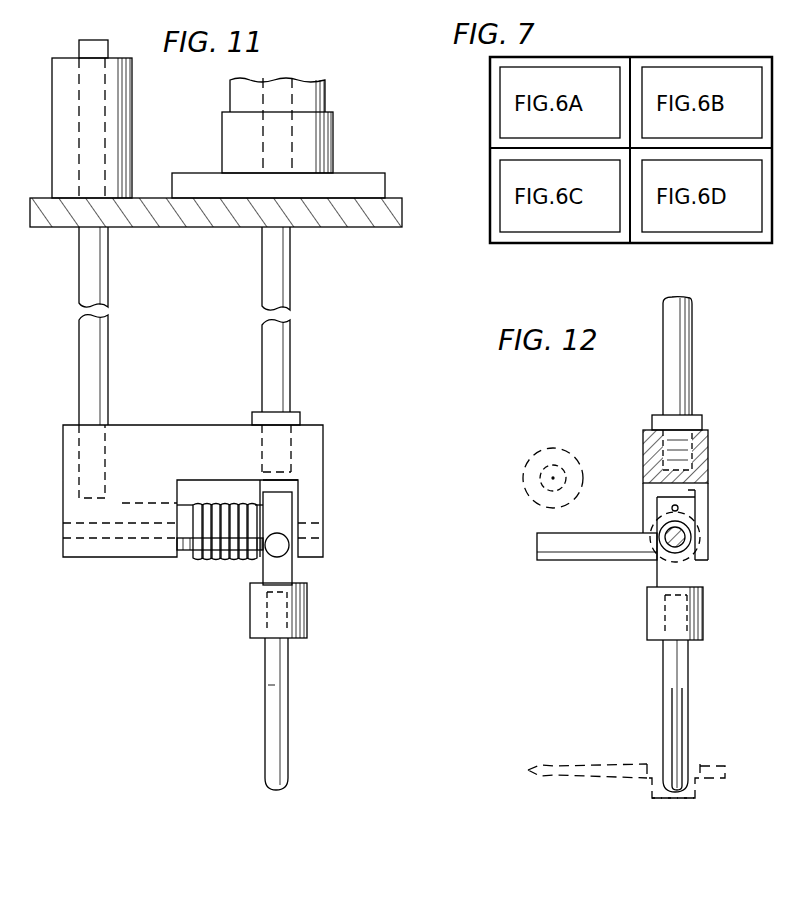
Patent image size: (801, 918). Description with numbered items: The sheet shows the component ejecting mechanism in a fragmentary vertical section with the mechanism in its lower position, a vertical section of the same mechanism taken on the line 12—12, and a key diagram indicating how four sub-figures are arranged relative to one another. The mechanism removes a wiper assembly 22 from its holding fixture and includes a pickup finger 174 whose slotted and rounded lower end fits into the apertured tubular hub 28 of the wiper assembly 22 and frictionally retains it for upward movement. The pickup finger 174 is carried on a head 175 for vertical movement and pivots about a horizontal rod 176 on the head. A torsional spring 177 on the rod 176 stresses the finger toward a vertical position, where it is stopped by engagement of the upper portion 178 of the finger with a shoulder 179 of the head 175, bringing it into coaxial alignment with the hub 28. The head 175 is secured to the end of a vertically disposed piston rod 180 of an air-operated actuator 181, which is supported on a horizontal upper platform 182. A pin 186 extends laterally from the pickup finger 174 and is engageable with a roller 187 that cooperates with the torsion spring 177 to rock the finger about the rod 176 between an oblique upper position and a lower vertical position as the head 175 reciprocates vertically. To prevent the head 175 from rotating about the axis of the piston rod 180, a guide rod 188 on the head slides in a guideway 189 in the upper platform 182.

In FIG. 11, the section line 12— 12 is at (245, 350).
In FIG. 12, the wiper assembly 22 is at (598, 761).
In FIG. 12, the tubular hub 28 is at (690, 762).
In FIG. 11, the pickup finger 174 is at (284, 705).
In FIG. 12, the pickup finger 174 is at (690, 707).
In FIG. 11, the head 175 is at (164, 442).
In FIG. 12, the head 175 is at (710, 461).
In FIG. 11, the horizontal rod 176 is at (128, 540).
In FIG. 12, the horizontal rod 176 is at (692, 537).
In FIG. 11, the torsional spring 177 is at (212, 560).
In FIG. 12, the torsional spring 177 is at (653, 522).
In FIG. 11, the upper portion of pickup finger 178 is at (287, 497).
In FIG. 11, the shoulder 179 is at (287, 487).
In FIG. 12, the shoulder 179 is at (690, 490).
In FIG. 11, the piston rod 180 is at (286, 278).
In FIG. 12, the piston rod 180 is at (690, 364).
In FIG. 11, the air-operated actuator 181 is at (318, 96).
In FIG. 11, the upper platform 182 is at (215, 210).
In FIG. 11, the pin 186 is at (290, 546).
In FIG. 12, the pin 186 is at (567, 552).
In FIG. 12, the roller 187 is at (522, 466).
In FIG. 11, the guide rod 188 is at (100, 268).
In FIG. 11, the guideway 189 is at (60, 215).